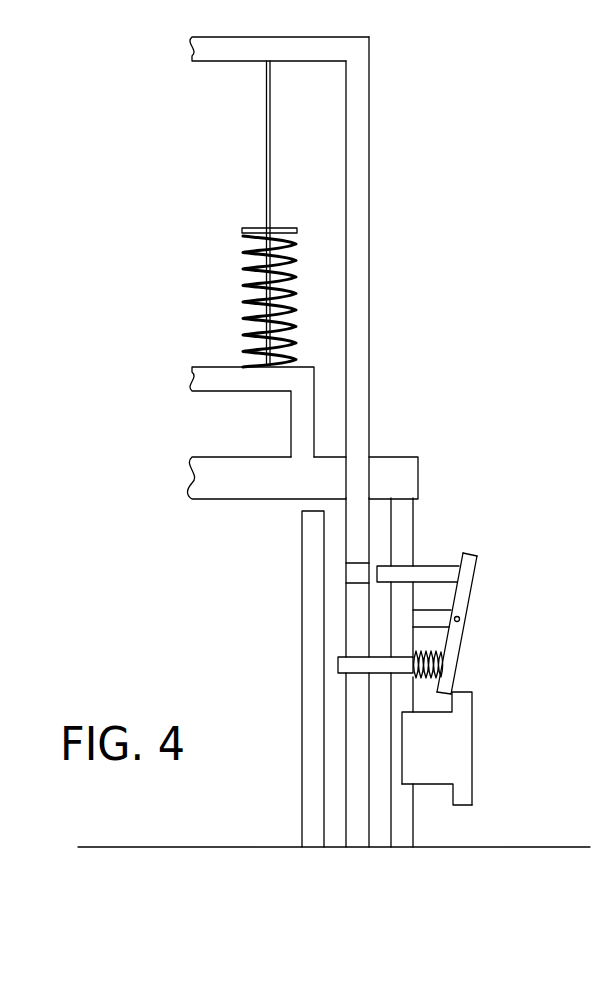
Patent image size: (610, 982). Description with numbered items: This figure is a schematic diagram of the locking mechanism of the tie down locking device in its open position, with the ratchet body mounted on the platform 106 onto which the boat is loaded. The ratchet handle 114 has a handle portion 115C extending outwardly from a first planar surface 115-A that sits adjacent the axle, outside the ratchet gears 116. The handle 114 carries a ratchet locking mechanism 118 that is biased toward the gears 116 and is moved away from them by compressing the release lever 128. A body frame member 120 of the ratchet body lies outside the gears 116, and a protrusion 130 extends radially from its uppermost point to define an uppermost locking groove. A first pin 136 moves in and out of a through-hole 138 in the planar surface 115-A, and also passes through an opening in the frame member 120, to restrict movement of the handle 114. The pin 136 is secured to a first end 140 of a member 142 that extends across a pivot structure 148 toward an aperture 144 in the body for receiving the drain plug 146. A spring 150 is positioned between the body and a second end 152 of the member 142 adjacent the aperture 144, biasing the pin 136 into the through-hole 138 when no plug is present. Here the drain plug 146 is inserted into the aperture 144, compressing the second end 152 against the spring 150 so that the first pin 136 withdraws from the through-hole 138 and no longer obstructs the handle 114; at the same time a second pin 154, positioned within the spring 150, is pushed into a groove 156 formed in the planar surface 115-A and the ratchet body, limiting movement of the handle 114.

The handle portion 115C is at (355, 81).
The ratchet handle 114 is at (357, 203).
The release lever 128 is at (302, 393).
The ratchet locking mechanism 118 is at (222, 477).
The ratchet gears 116 is at (313, 835).
The first planar surface 115-A is at (357, 833).
The protrusion 130 is at (403, 517).
The body frame member 120 is at (402, 833).
The through-hole 138 is at (359, 563).
The first pin 136 is at (436, 567).
The first end 140 is at (477, 565).
The member 142 is at (463, 594).
The second end 152 is at (445, 679).
The pivot structure 148 is at (433, 620).
The spring 150 is at (433, 641).
The second pin 154 is at (402, 665).
The groove 156 is at (357, 675).
The drain plug 146 is at (448, 746).
The aperture 144 is at (402, 767).
The platform 106 is at (176, 847).